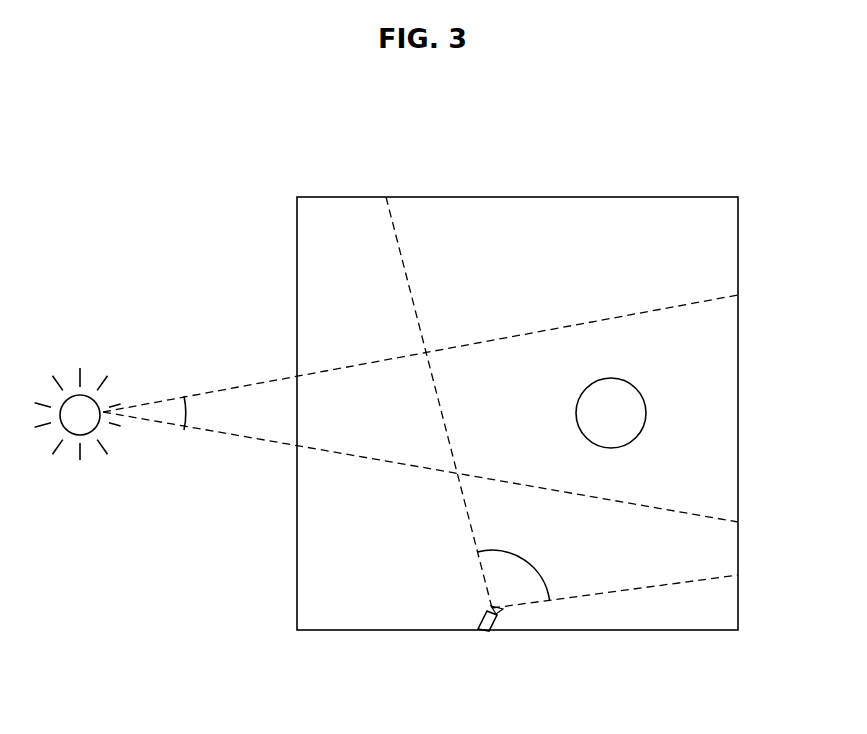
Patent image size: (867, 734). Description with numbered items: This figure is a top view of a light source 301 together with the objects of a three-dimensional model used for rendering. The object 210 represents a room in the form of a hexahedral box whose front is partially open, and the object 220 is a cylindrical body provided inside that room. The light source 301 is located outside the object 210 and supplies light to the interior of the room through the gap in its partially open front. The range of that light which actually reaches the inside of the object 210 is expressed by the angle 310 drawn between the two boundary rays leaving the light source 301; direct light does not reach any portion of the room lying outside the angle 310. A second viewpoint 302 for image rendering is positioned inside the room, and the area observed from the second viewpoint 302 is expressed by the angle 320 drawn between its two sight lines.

The object 210 is at (514, 197).
The object 220 is at (646, 399).
The light source 301 is at (70, 400).
The second viewpoint 302 is at (487, 632).
The angle 310 is at (186, 412).
The angle 320 is at (552, 590).